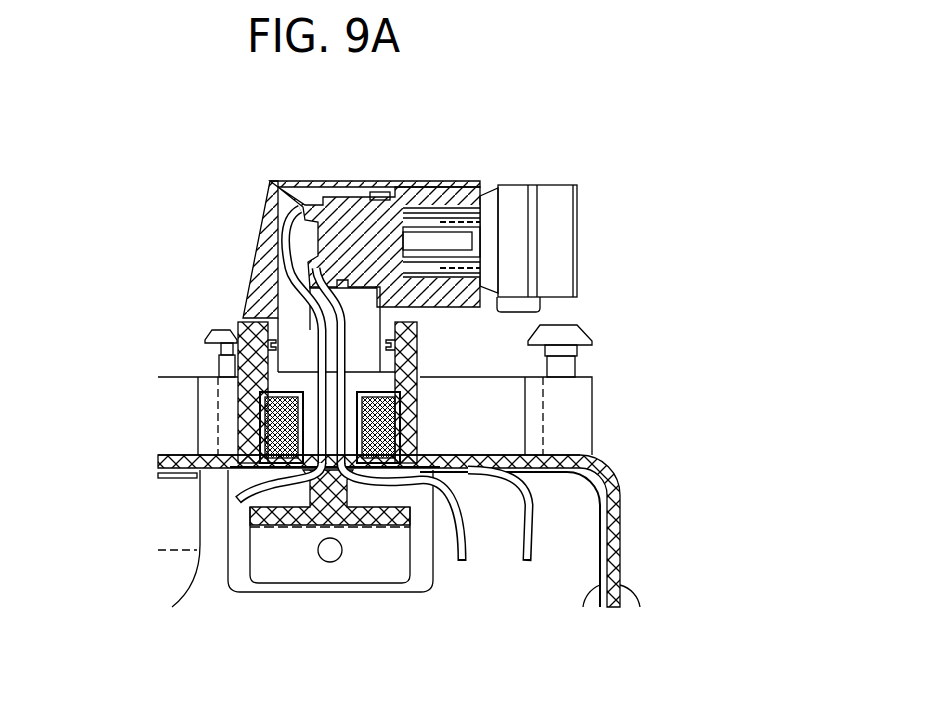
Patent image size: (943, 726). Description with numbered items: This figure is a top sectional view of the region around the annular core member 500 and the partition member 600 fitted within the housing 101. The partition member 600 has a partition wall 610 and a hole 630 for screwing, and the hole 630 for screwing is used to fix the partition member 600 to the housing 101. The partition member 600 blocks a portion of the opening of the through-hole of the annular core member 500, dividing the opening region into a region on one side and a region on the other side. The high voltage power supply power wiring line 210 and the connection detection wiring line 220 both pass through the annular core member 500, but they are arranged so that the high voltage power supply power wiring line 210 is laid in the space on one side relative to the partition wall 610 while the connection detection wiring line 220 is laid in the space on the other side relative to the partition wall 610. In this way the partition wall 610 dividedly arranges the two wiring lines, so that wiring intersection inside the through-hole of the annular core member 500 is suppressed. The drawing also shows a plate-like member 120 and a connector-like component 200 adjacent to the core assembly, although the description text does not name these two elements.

The housing 101 is at (605, 462).
The mounting plate 120 is at (370, 378).
The connector 200 is at (558, 222).
The high voltage power supply power wiring line 210 is at (462, 562).
The connection detection wiring line 220 is at (305, 470).
The annular core member 500 is at (243, 316).
The partition member 600 is at (283, 512).
The partition wall 610 is at (262, 418).
The hole for screwing 630 is at (323, 562).